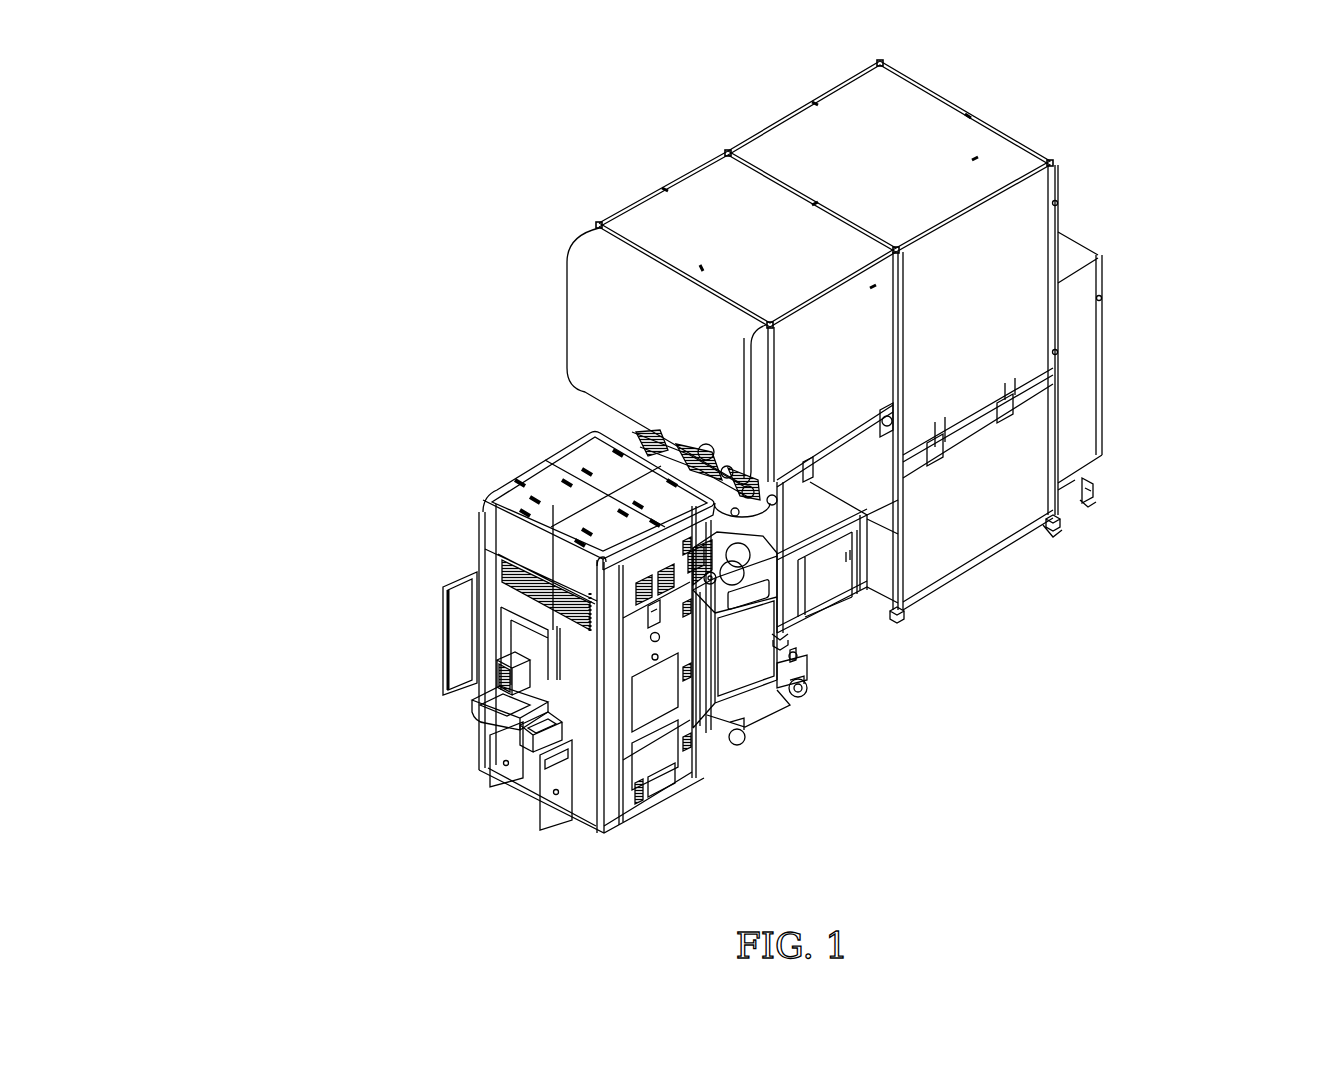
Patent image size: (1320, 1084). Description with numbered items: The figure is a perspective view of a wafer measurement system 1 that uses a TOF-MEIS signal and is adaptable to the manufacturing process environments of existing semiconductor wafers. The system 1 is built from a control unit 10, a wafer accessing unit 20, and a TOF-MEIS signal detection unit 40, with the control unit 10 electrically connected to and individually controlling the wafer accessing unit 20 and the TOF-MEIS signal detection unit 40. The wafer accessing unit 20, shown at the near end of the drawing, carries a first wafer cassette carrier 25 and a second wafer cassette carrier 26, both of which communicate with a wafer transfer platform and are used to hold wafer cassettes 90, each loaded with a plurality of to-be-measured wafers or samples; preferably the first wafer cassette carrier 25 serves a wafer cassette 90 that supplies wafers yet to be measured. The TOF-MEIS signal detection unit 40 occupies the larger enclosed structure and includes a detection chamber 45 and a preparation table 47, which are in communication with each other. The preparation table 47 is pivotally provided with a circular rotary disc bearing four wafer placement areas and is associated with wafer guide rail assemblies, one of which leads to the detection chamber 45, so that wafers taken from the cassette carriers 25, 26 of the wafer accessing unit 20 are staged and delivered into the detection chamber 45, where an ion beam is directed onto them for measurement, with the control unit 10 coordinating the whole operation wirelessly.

The wafer measurement system 1 is at (220, 186).
The control unit 10 is at (1105, 240).
The wafer accessing unit 20 is at (458, 497).
The first wafer cassette carrier 25 is at (535, 742).
The second wafer cassette carrier 26 is at (473, 720).
The TOF-MEIS signal detection unit 40 is at (985, 100).
The detection chamber 45 is at (788, 504).
The preparation table 47 is at (764, 713).
The wafer cassette 90 is at (478, 715).